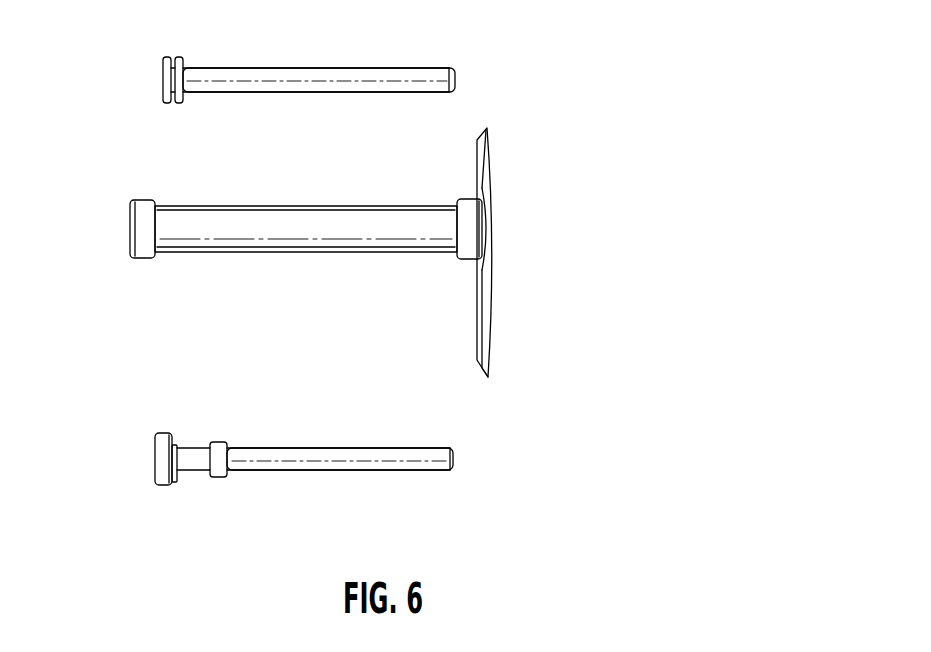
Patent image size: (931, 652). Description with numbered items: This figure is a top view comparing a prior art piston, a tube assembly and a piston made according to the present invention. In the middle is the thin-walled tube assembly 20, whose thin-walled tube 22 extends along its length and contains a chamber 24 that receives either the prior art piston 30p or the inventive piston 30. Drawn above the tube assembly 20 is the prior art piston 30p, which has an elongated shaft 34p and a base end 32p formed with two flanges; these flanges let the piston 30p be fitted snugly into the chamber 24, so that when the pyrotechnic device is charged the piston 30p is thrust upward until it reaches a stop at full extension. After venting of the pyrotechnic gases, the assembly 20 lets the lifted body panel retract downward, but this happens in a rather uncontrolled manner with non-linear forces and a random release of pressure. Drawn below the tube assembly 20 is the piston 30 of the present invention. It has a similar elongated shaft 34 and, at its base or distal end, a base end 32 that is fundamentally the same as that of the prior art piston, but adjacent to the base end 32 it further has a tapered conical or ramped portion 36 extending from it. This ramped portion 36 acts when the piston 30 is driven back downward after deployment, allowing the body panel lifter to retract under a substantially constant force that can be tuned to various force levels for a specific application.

The thin-walled tube assembly 20 is at (493, 210).
The thin-walled tube 22 is at (203, 225).
The chamber 24 is at (180, 245).
The piston 30 is at (453, 458).
The base end 32 is at (163, 468).
The elongated shaft 34 is at (350, 470).
The tapered conical or ramped portion 36 is at (205, 470).
The prior art piston 30p is at (457, 80).
The base end 32p is at (163, 82).
The elongated shaft 34p is at (278, 68).